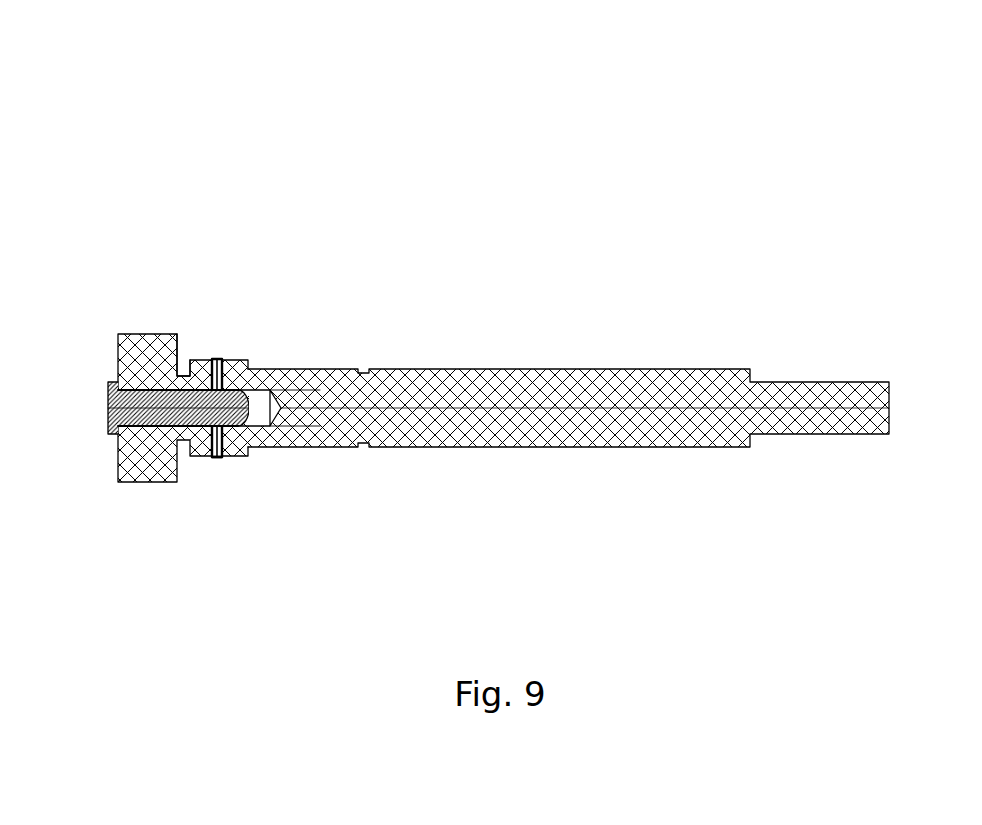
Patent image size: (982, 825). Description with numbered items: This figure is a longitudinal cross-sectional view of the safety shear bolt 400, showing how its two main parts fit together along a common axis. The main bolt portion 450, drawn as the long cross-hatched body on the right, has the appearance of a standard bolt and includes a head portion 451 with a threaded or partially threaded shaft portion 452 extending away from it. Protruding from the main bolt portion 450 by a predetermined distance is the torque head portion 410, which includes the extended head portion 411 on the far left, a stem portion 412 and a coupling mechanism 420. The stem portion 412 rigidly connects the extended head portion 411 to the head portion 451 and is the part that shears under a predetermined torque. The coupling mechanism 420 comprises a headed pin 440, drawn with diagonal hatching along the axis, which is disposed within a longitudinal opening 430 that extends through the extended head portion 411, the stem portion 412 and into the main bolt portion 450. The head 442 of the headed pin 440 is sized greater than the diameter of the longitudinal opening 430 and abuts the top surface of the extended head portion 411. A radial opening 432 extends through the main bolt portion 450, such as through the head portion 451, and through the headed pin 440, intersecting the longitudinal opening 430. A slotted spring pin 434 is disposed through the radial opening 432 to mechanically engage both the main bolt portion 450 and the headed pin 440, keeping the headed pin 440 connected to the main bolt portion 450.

The safety shear bolt 400 is at (148, 118).
The torque head portion 410 is at (112, 262).
The extended head portion 411 is at (138, 492).
The stem portion 412 is at (188, 375).
The coupling mechanism 420 is at (93, 387).
The longitudinal opening 430 is at (258, 387).
The radial opening 432 is at (223, 373).
The slotted spring pin 434 is at (217, 460).
The headed pin 440 is at (257, 416).
The head 442 is at (110, 438).
The main bolt portion 450 is at (188, 262).
The head portion 451 is at (243, 461).
The shaft portion 452 is at (478, 367).